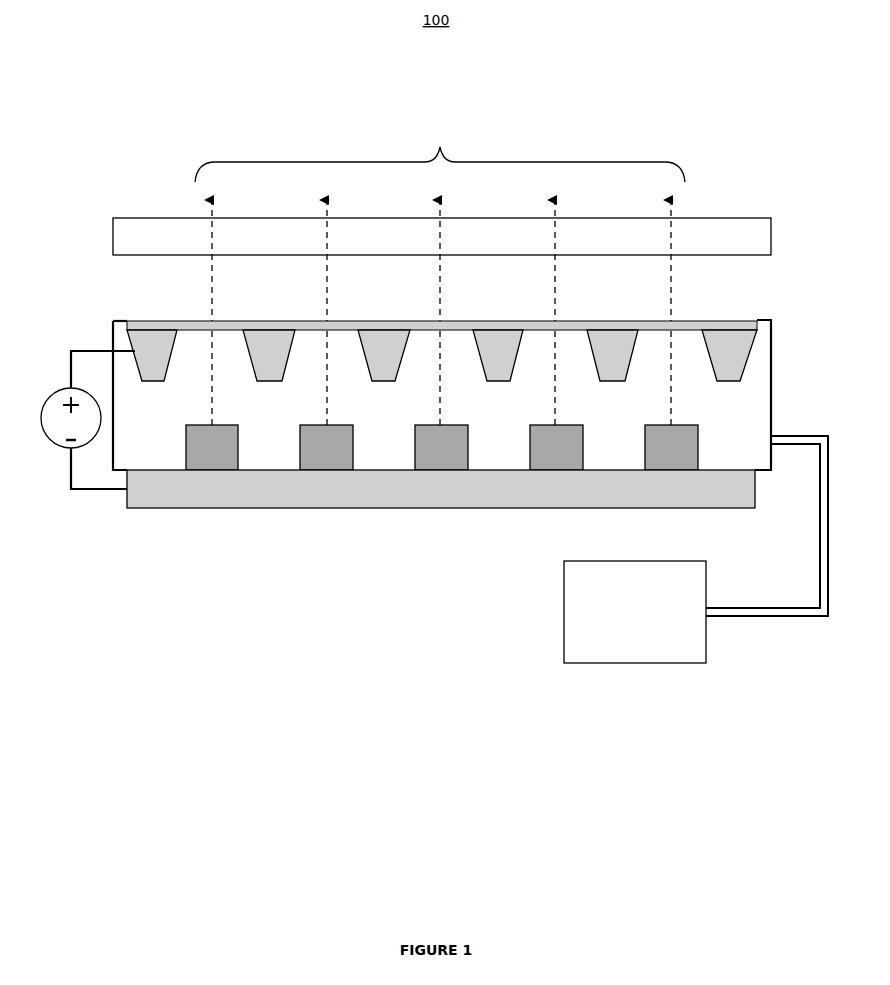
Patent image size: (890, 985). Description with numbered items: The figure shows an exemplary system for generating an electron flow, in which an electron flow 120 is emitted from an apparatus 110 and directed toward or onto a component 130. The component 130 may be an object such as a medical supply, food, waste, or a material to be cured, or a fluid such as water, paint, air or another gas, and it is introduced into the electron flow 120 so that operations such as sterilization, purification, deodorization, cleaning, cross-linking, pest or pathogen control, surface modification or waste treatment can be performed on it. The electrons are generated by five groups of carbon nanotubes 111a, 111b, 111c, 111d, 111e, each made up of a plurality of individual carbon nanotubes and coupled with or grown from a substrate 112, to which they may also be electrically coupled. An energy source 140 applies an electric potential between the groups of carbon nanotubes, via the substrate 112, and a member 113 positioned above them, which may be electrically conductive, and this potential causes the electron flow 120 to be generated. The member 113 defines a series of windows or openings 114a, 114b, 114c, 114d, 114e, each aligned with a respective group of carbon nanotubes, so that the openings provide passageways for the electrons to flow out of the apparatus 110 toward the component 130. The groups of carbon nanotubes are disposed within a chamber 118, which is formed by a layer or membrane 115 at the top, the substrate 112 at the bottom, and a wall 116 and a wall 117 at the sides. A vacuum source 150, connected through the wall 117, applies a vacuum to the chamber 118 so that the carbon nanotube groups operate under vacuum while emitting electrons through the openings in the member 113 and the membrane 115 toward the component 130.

The apparatus 110 is at (115, 303).
The group of carbon nanotubes 111a is at (190, 455).
The group of carbon nanotubes 111b is at (305, 455).
The group of carbon nanotubes 111c is at (420, 455).
The group of carbon nanotubes 111d is at (535, 455).
The group of carbon nanotubes 111e is at (650, 455).
The substrate 112 is at (147, 495).
The member 113 is at (778, 328).
The opening 114a is at (192, 366).
The opening 114b is at (308, 366).
The opening 114c is at (421, 366).
The opening 114d is at (536, 366).
The opening 114e is at (651, 366).
The layer or membrane 115 is at (720, 326).
The wall 116 is at (111, 325).
The wall 117 is at (772, 420).
The chamber 118 is at (733, 445).
The electron flow 120 is at (440, 275).
The component 130 is at (136, 228).
The energy source 140 is at (41, 418).
The vacuum source 150 is at (635, 612).